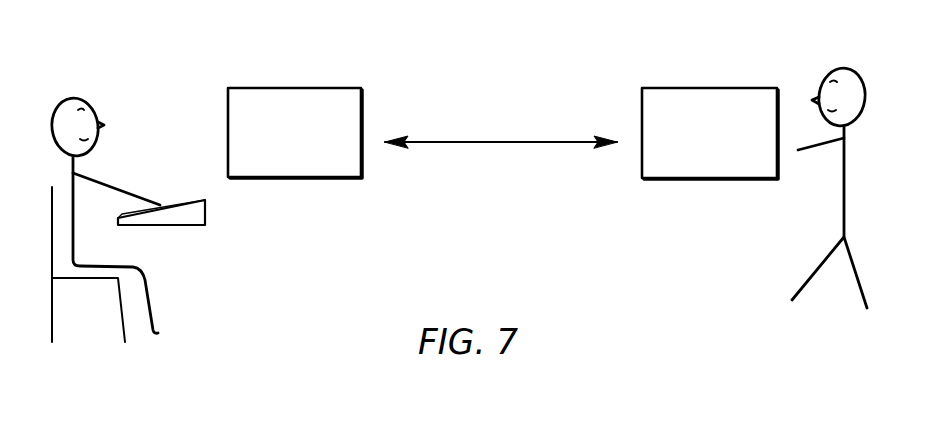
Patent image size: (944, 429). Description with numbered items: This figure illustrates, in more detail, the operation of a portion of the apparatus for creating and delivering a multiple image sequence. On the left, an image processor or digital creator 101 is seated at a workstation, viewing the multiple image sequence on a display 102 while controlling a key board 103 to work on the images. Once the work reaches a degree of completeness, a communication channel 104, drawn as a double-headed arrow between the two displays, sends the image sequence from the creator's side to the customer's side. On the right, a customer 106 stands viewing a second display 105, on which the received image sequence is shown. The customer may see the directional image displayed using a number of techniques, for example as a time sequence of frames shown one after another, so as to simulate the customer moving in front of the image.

The image processor or digital creator 101 is at (92, 102).
The display 102 is at (287, 88).
The key board 103 is at (193, 227).
The communication channel 104 is at (492, 142).
The display 105 is at (682, 88).
The customer 106 is at (823, 75).